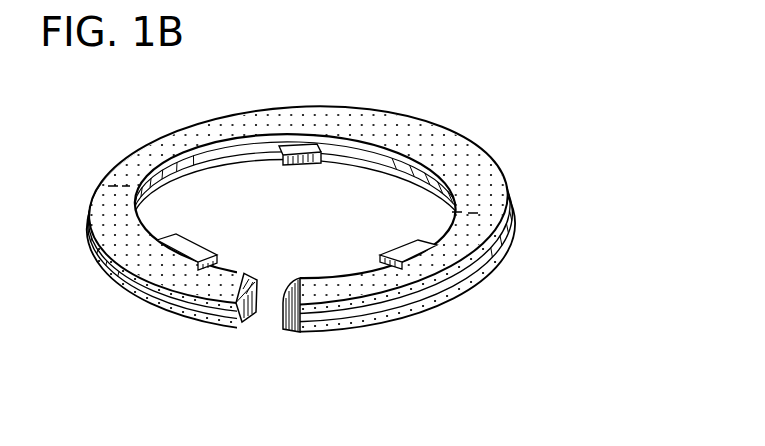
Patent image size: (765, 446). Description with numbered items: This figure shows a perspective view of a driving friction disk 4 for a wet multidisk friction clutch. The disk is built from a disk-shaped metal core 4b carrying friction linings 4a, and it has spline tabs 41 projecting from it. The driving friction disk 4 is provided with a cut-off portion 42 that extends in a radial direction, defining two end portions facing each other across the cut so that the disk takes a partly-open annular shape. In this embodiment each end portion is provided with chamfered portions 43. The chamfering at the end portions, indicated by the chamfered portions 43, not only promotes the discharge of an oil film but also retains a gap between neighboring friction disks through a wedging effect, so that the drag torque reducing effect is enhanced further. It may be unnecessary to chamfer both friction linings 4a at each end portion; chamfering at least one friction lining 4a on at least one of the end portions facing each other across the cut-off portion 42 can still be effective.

The driving friction disk 4 is at (491, 138).
The friction lining 4a is at (138, 255).
The disk-shaped metal core 4b is at (178, 304).
The spline tab 41 is at (303, 147).
The cut-off portion 42 is at (282, 270).
The chamfered portion 43 is at (247, 271).